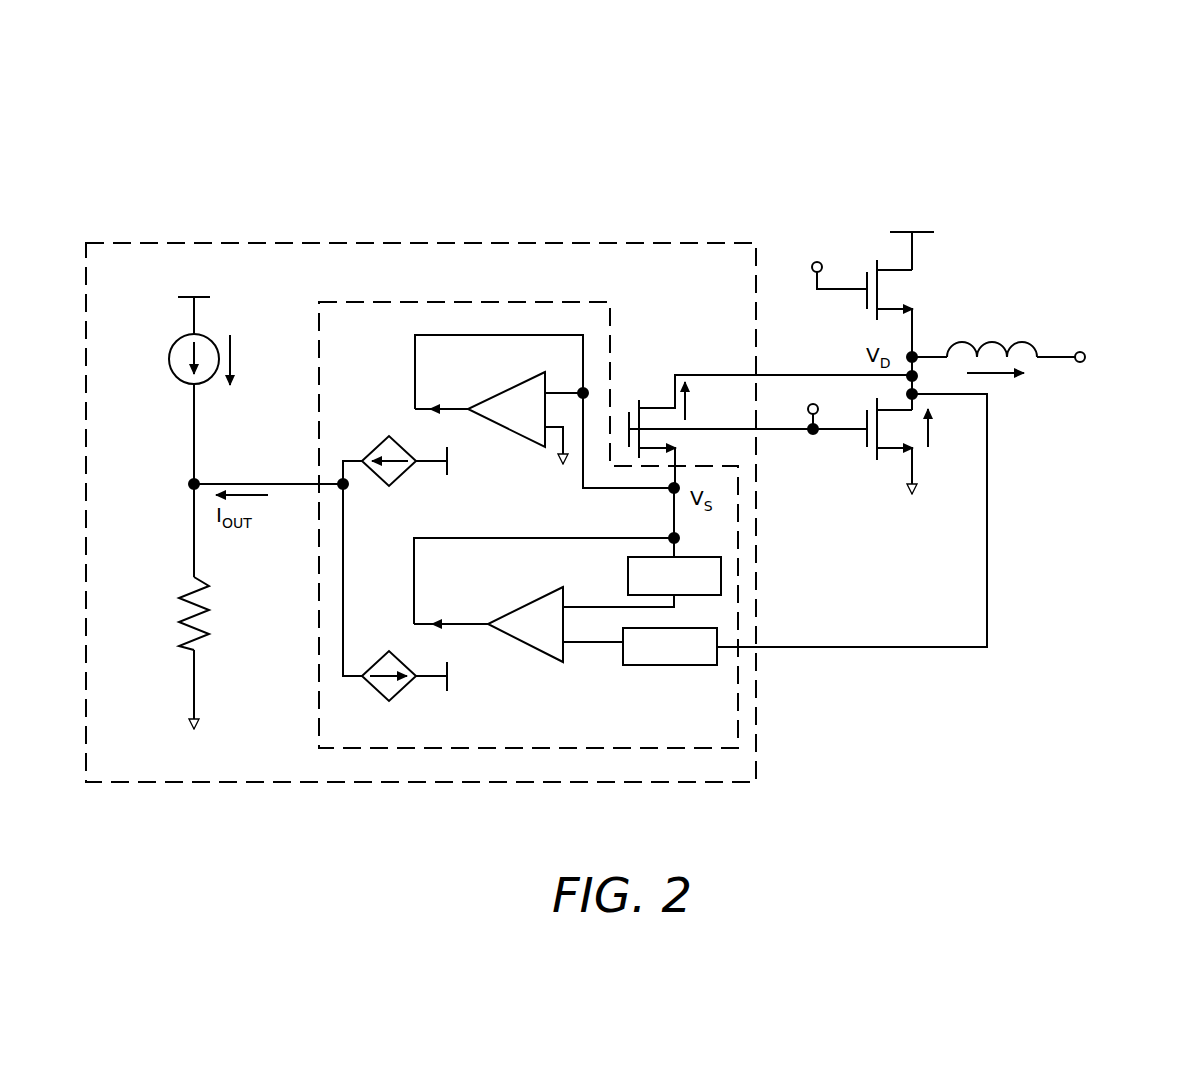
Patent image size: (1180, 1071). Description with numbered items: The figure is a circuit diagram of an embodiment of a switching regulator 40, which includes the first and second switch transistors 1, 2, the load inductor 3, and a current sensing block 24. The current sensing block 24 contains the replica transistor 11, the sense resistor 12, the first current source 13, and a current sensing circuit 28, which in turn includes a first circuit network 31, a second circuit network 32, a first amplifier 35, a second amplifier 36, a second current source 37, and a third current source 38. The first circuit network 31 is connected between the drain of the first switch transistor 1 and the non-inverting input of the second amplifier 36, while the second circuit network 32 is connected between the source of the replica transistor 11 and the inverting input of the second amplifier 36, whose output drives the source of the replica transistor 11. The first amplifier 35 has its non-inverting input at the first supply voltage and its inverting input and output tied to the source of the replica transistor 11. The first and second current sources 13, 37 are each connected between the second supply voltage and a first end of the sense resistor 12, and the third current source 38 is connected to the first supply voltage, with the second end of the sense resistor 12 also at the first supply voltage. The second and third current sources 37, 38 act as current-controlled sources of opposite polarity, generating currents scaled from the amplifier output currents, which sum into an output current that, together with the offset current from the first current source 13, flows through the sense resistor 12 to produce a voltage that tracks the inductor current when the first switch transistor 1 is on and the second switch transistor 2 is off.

The first switch transistor 1 is at (864, 447).
The second switch transistor 2 is at (866, 315).
The load inductor 3 is at (998, 346).
The replica transistor 11 is at (628, 425).
The sense resistor 12 is at (210, 618).
The first current source 13 is at (178, 340).
The current sensing block 24 is at (130, 243).
The current sensing circuit 28 is at (365, 302).
The first circuit network 31 is at (650, 665).
The second circuit network 32 is at (628, 578).
The first amplifier 35 is at (535, 445).
The second amplifier 36 is at (548, 662).
The second current source 37 is at (382, 443).
The third current source 38 is at (396, 658).
The switching regulator 40 is at (1050, 146).